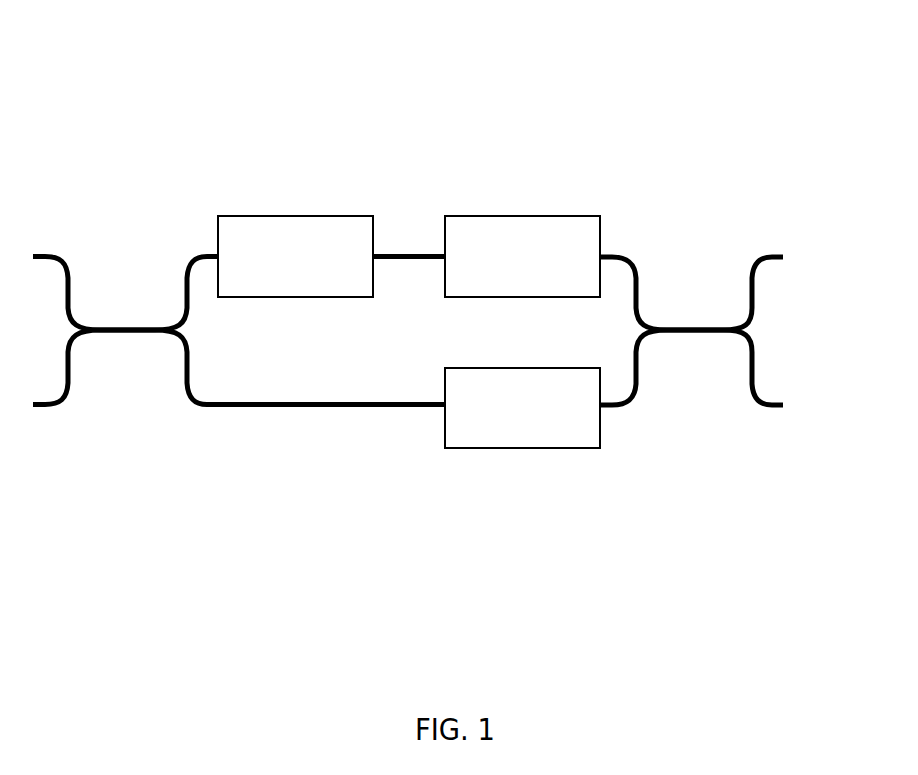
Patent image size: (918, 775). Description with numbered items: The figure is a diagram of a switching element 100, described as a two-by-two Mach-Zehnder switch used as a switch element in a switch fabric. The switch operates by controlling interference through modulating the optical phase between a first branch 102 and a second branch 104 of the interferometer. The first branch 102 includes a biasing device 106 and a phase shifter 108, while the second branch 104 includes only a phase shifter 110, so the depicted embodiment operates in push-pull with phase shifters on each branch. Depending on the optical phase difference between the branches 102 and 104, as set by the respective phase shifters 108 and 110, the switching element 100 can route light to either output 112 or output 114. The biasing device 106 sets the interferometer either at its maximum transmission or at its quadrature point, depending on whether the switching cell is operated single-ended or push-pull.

The switching element 100 is at (381, 28).
The first branch 102 is at (201, 254).
The second branch 104 is at (194, 405).
The biasing device 106 is at (278, 282).
The phase shifter 108 is at (505, 282).
The phase shifter 110 is at (505, 434).
The output 112 is at (761, 257).
The output 114 is at (754, 394).